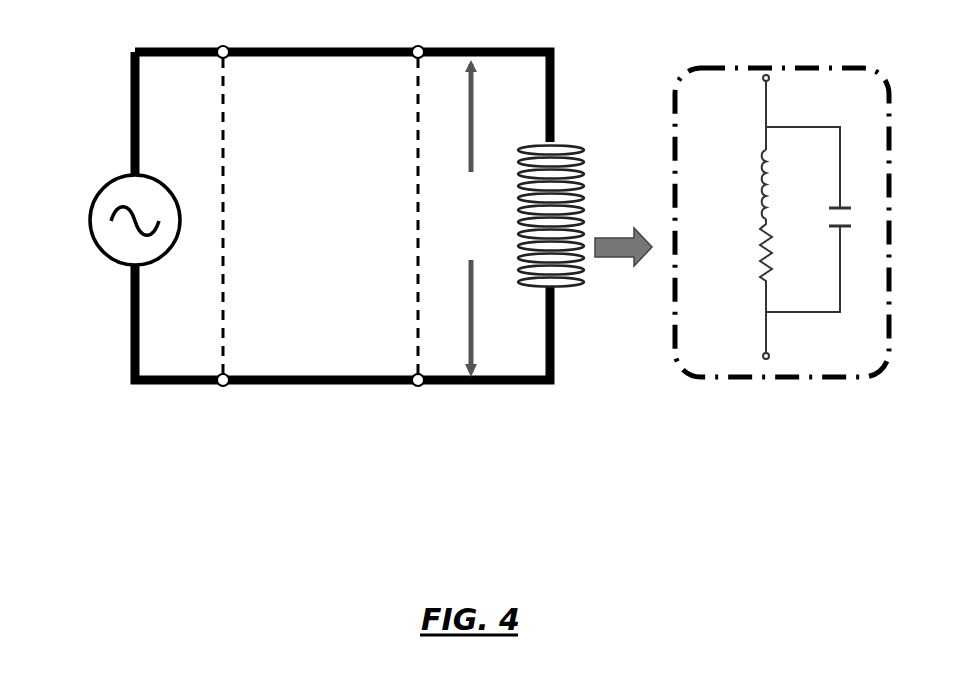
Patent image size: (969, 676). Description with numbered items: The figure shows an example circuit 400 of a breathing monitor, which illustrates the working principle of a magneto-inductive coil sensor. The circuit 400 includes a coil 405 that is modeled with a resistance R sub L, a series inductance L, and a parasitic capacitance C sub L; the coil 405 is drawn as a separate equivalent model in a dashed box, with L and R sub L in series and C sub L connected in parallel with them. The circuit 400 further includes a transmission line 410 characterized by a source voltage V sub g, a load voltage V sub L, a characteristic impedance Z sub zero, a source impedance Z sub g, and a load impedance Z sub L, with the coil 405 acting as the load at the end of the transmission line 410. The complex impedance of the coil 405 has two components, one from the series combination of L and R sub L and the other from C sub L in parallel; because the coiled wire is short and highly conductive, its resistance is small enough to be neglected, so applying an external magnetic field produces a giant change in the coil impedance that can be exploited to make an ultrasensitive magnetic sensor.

The circuit 400 is at (454, 282).
The coil 405 is at (780, 68).
The transmission line 410 is at (346, 242).